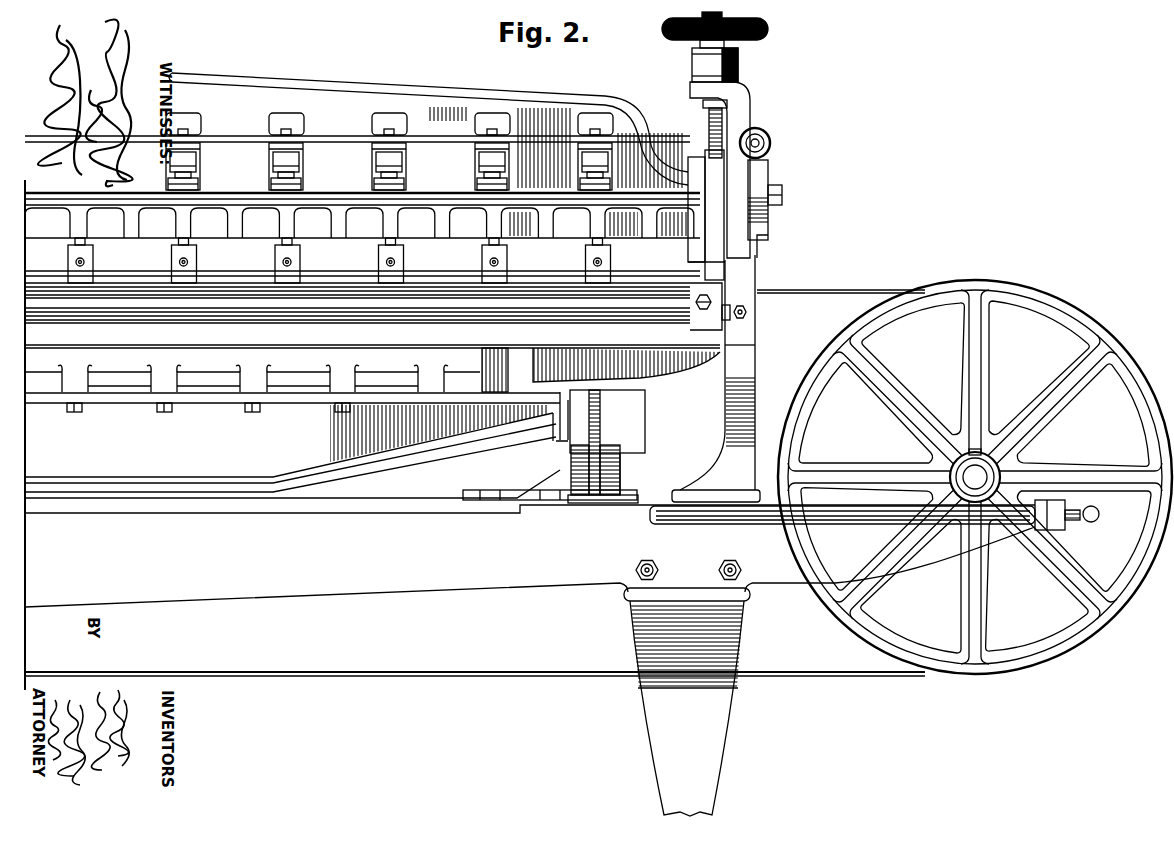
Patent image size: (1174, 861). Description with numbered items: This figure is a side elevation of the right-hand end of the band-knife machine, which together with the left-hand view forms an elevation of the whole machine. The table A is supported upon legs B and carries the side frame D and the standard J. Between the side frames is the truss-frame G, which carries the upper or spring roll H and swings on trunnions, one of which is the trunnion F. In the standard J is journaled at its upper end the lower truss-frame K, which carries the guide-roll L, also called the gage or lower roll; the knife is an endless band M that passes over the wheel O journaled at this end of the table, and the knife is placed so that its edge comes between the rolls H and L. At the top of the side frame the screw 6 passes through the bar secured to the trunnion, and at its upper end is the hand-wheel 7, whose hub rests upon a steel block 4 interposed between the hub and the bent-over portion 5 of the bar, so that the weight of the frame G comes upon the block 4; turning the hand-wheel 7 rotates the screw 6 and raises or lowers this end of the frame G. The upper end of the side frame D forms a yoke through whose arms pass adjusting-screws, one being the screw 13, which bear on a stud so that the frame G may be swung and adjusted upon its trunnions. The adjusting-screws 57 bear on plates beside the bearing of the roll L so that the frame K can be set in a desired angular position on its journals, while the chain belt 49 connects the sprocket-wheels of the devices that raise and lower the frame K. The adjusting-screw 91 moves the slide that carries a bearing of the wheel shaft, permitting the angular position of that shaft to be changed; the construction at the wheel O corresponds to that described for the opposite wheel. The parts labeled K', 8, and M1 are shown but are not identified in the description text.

The table A is at (530, 556).
The legs B is at (687, 689).
The lower frame rail M1 is at (475, 663).
The band-knife M is at (841, 280).
The upper or spring roll H is at (536, 275).
The guide-roll L is at (357, 313).
The bracket rail K' is at (372, 367).
The lower truss-frame K is at (296, 450).
The chain belt 49 is at (525, 492).
The standard J is at (602, 446).
The side frame D is at (722, 378).
The adjusting-screws 57 is at (721, 309).
The slide bar 8 is at (706, 215).
The truss-frame G is at (357, 126).
The screw 6 is at (705, 129).
The bent-over portion of bar 3 5 is at (752, 104).
The steel block 4 is at (738, 66).
The hand-wheel 7 is at (721, 30).
The adjusting-screw 13 is at (770, 138).
The trunnion F is at (770, 184).
The adjusting-screw 91 is at (886, 513).
The wheel O is at (968, 477).